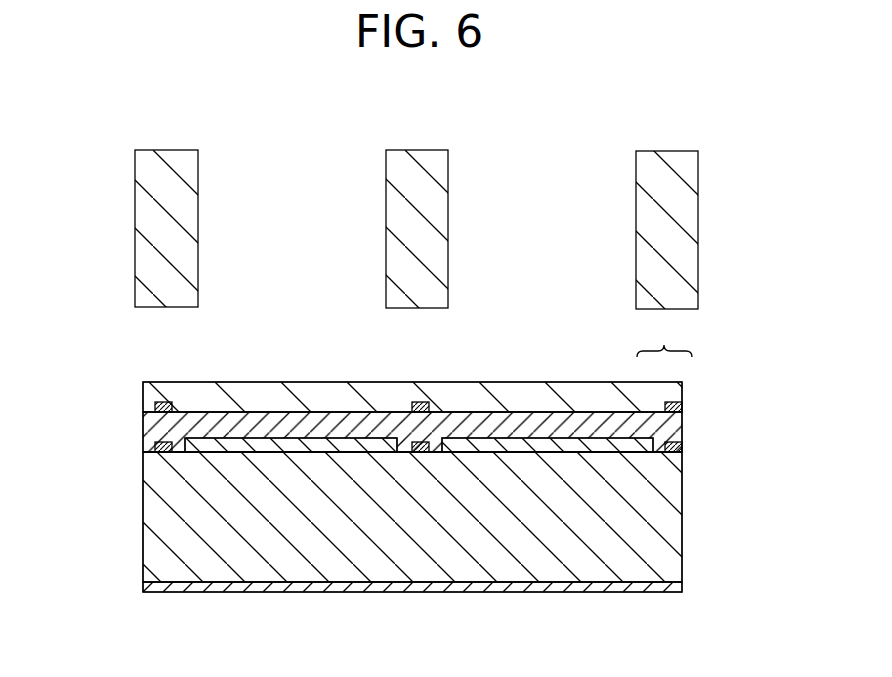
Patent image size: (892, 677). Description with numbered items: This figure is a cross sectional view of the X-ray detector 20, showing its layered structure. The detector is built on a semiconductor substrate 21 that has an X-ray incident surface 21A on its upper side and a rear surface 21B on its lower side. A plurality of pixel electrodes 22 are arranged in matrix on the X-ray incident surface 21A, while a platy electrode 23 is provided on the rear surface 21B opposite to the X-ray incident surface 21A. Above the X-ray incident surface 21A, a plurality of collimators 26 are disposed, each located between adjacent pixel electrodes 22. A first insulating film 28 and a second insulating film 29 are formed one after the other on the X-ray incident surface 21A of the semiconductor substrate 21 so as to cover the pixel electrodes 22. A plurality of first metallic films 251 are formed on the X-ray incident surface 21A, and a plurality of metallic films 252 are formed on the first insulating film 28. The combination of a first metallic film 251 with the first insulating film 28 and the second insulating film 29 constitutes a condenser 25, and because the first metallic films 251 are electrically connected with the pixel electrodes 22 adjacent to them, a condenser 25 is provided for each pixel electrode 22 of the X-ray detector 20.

The X-ray detector 20 is at (756, 141).
The semiconductor substrate 21 is at (660, 523).
The X-ray incident surface 21A is at (145, 452).
The rear surface 21B is at (142, 588).
The pixel electrode 22 is at (652, 455).
The platy electrode 23 is at (515, 590).
The condenser 25 is at (664, 339).
The first metallic film 251 is at (680, 450).
The metallic film 252 is at (682, 407).
The collimator 26 is at (677, 243).
The first insulating film 28 is at (675, 427).
The second insulating film 29 is at (145, 403).